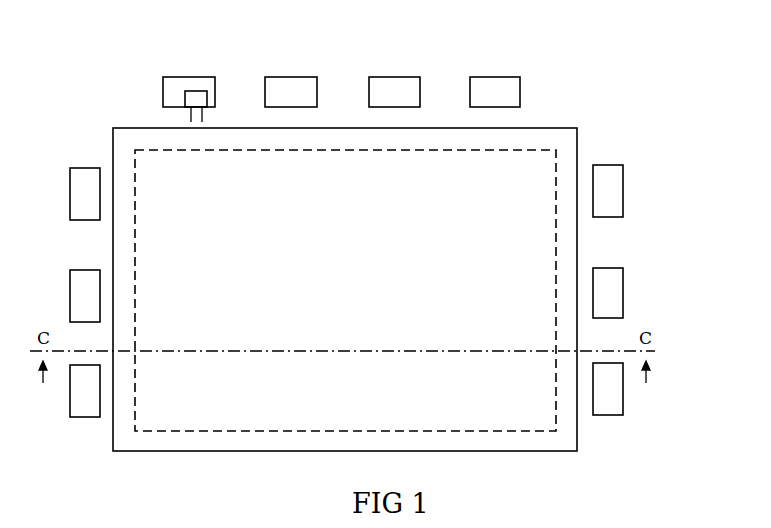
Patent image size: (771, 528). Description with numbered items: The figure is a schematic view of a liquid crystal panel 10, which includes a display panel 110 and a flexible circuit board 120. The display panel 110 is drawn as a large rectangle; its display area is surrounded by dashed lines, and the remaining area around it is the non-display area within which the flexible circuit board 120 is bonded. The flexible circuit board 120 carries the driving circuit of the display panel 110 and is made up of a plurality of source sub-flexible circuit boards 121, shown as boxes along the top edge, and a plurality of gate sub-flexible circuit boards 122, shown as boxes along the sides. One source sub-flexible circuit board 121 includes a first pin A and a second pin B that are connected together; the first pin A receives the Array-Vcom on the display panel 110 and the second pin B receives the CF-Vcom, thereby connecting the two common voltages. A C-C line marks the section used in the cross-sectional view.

The liquid crystal panel 10 is at (303, 58).
The display panel 110 is at (148, 227).
The flexible circuit board 120 is at (697, 57).
The source sub-flexible circuit board 121 is at (397, 77).
The gate sub-flexible circuit board 122 is at (623, 268).